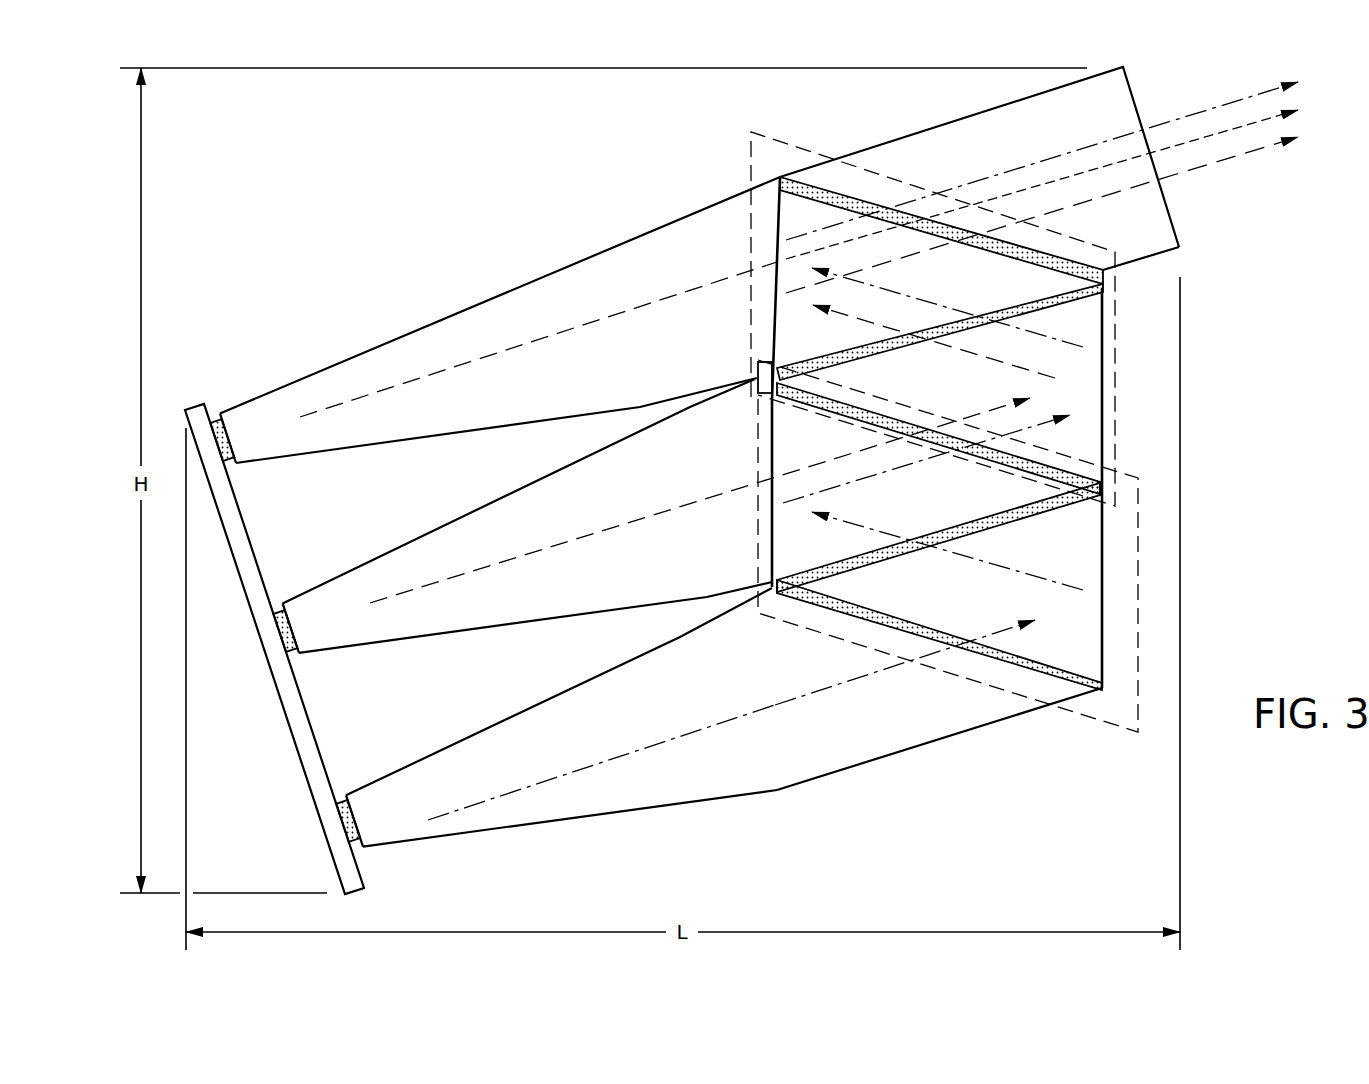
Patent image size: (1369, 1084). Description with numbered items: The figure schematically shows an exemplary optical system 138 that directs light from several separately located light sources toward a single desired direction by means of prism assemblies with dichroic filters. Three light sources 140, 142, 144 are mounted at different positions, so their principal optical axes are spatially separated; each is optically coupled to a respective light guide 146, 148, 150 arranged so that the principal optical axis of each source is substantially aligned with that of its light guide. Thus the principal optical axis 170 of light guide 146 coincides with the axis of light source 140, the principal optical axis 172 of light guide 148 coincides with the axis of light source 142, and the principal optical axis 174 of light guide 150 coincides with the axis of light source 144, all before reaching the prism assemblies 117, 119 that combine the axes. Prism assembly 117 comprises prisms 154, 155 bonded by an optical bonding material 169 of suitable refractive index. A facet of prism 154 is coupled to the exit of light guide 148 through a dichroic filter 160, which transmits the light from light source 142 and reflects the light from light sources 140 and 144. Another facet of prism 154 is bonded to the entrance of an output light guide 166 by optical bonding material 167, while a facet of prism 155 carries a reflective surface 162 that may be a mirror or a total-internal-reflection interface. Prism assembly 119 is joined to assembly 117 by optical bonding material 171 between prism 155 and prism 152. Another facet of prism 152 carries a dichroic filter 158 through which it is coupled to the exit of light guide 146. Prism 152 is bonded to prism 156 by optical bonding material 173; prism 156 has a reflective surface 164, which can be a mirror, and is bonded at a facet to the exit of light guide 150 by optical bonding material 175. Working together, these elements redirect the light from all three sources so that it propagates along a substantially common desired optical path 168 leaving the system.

The prism assembly 117 is at (748, 160).
The prism assembly 119 is at (756, 470).
The optical system 138 is at (1270, 555).
The light source 140 is at (279, 610).
The light source 142 is at (216, 418).
The light source 144 is at (341, 800).
The light guide 146 is at (594, 501).
The light guide 148 is at (582, 297).
The light guide 150 is at (697, 681).
The prism 152 is at (902, 506).
The prism 154 is at (944, 287).
The prism 155 is at (912, 392).
The prism 156 is at (912, 604).
The dichroic filter 158 is at (769, 529).
The dichroic filter 160 is at (775, 243).
The reflective surface 162 is at (1104, 382).
The reflective surface 164 is at (1104, 668).
The light guide 166 is at (1005, 142).
The optical bonding material 167 is at (1080, 266).
The common desired optical path 168 is at (1302, 156).
The optical bonding material 169 is at (800, 364).
The principal optical axis 170 is at (593, 538).
The optical bonding material 171 is at (1082, 458).
The principal optical axis 172 is at (537, 344).
The optical bonding material 173 is at (1033, 506).
The principal optical axis 174 is at (707, 722).
The optical bonding material 175 is at (1043, 672).